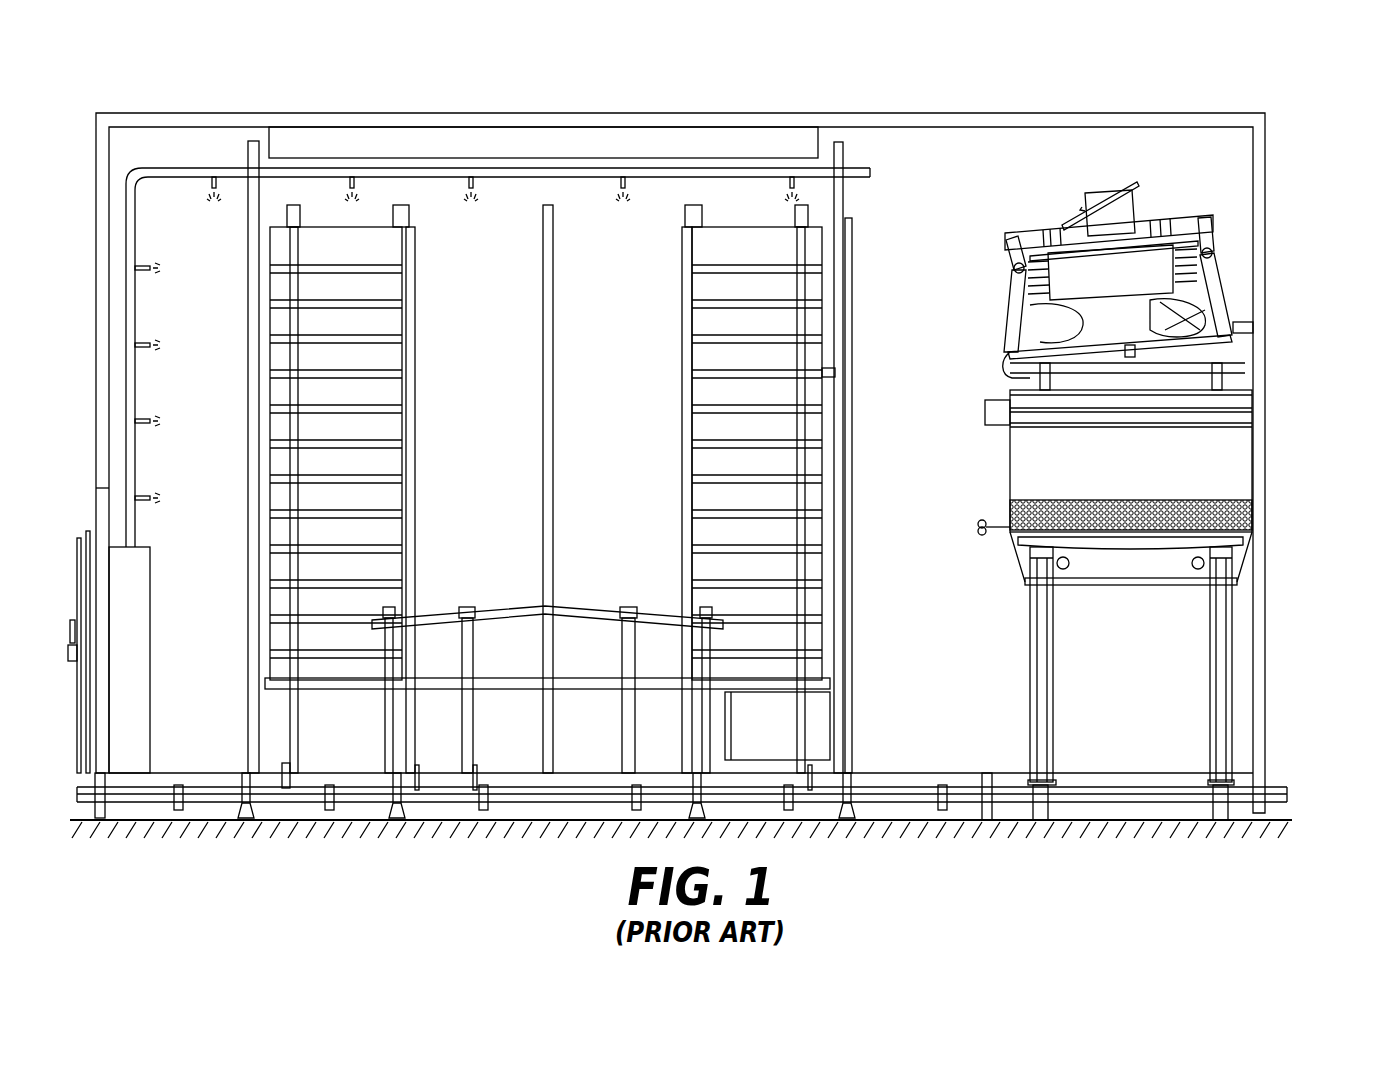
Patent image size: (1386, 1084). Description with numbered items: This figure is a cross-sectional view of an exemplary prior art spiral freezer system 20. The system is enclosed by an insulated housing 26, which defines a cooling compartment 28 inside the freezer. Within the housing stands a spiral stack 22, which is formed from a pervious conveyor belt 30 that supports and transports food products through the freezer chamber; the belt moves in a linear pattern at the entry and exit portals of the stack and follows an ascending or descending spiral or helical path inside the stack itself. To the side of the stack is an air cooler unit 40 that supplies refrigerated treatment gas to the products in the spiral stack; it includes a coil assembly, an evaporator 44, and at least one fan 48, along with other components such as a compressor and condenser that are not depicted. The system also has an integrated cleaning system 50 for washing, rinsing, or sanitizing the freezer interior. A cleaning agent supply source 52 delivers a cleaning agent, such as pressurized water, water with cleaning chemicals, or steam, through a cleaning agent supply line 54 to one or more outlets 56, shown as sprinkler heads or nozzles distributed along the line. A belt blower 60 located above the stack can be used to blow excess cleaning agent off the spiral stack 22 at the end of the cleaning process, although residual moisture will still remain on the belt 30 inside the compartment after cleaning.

The spiral freezer system 20 is at (1342, 137).
The spiral stack 22 is at (370, 225).
The insulated housing 26 is at (1268, 652).
The cooling compartment 28 is at (189, 230).
The pervious conveyor belt 30 is at (748, 268).
The air cooler unit 40 is at (1224, 241).
The evaporator 44 is at (1253, 455).
The fan 48 is at (1214, 293).
The integrated cleaning system 50 is at (106, 690).
The cleaning agent supply source 52 is at (123, 547).
The cleaning agent supply line 54 is at (128, 314).
The outlets 56 is at (213, 177).
The belt blower 60 is at (586, 146).